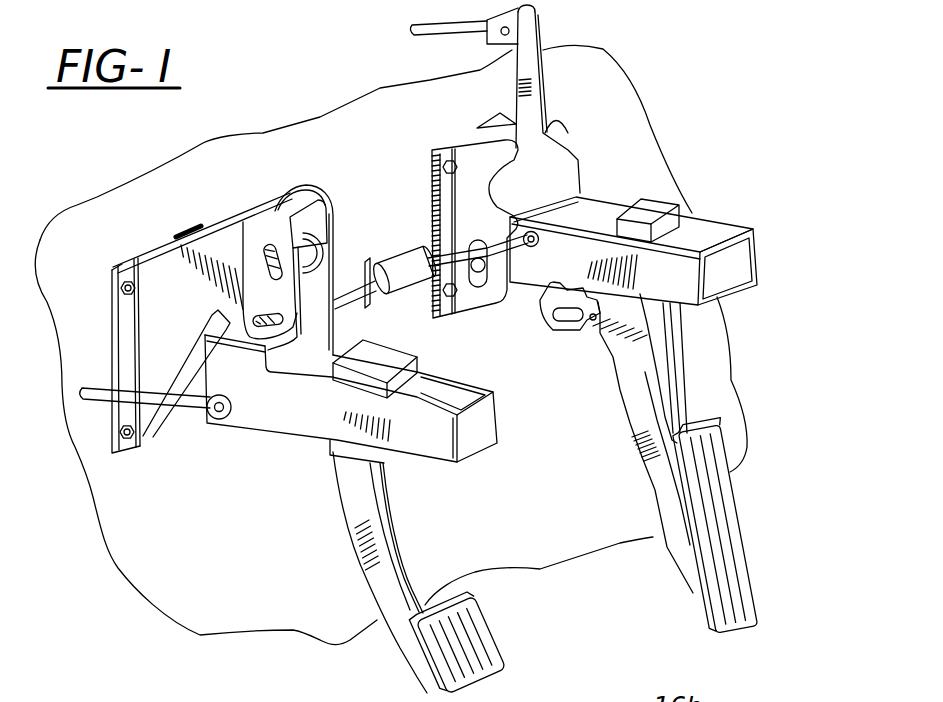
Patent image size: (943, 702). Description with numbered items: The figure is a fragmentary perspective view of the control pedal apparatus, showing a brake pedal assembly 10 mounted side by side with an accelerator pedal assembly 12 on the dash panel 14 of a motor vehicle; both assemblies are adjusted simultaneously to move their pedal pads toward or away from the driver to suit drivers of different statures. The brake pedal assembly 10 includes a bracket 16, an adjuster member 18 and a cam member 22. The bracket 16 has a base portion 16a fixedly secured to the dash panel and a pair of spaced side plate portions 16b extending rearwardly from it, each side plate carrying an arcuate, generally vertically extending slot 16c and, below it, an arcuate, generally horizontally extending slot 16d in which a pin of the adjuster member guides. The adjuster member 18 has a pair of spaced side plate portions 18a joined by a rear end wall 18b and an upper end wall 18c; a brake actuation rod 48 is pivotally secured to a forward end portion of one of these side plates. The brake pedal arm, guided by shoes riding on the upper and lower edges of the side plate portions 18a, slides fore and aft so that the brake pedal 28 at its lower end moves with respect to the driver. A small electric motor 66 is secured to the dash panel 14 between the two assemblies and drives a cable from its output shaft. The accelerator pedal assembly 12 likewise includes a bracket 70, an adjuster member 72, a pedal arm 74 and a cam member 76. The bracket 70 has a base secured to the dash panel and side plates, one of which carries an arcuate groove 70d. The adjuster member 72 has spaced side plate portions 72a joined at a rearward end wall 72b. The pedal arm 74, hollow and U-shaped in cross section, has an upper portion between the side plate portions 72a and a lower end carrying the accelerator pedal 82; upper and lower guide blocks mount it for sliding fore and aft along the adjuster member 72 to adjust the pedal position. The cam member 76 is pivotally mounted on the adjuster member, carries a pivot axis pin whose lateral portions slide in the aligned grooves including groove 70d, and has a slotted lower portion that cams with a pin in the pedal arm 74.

The brake pedal assembly 10 is at (147, 509).
The accelerator pedal assembly 12 is at (687, 458).
The dash panel 14 is at (402, 130).
The bracket 16 is at (167, 277).
The base portion 16a is at (108, 300).
The side plate portions 16b is at (157, 250).
The arcuate generally vertically extending slot 16c is at (262, 251).
The arcuate generally horizontally extending slot 16d is at (262, 318).
The adjuster member 18 is at (400, 411).
The side plate portions 18a is at (441, 440).
The rear end wall 18b is at (492, 418).
The upper end wall 18c is at (282, 194).
The cam member 22 is at (337, 242).
The brake pedal 28 is at (497, 650).
The brake actuation rod 48 is at (78, 405).
The electric motor 66 is at (403, 270).
The bracket 70 is at (487, 188).
The arcuate groove 70d is at (480, 283).
The adjuster member 72 is at (683, 211).
The side plate portions 72a is at (600, 193).
The rearward end wall 72b is at (737, 262).
The pedal arm 74 is at (625, 470).
The cam member 76 is at (571, 325).
The accelerator pedal 82 is at (746, 600).